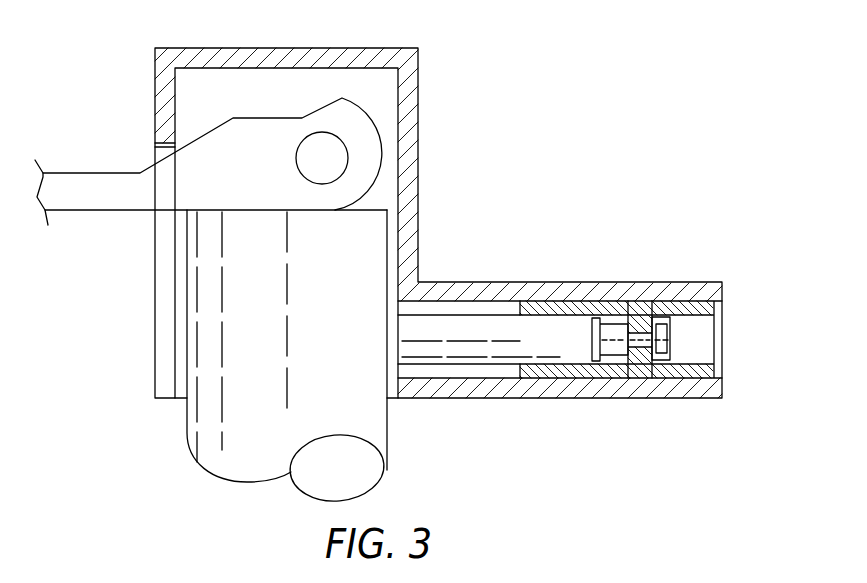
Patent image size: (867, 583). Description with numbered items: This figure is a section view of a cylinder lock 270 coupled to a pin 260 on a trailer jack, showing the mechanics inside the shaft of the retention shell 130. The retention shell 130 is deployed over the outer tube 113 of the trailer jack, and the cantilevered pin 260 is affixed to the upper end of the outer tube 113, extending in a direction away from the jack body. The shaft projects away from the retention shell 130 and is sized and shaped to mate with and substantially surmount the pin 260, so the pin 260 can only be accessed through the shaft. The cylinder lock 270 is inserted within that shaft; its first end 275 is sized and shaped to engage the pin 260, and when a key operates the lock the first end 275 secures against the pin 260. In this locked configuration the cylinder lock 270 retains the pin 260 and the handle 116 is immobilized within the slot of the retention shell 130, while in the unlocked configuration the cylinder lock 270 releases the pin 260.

The retention shell 130 is at (218, 48).
The handle 116 is at (88, 172).
The outer tube 113 is at (208, 455).
The first end 275 is at (665, 322).
The cylinder lock 270 is at (708, 340).
The pin 260 is at (613, 347).